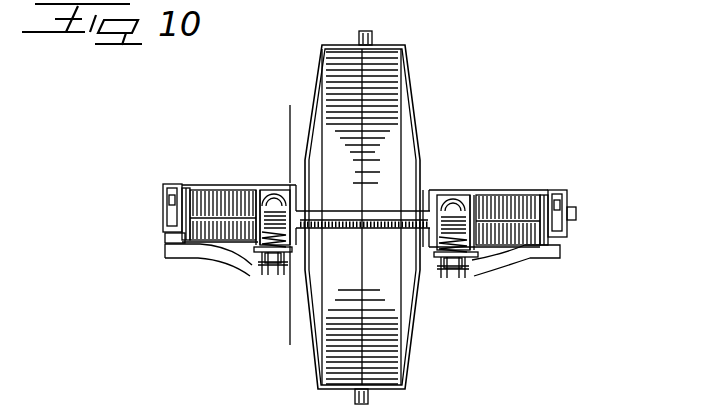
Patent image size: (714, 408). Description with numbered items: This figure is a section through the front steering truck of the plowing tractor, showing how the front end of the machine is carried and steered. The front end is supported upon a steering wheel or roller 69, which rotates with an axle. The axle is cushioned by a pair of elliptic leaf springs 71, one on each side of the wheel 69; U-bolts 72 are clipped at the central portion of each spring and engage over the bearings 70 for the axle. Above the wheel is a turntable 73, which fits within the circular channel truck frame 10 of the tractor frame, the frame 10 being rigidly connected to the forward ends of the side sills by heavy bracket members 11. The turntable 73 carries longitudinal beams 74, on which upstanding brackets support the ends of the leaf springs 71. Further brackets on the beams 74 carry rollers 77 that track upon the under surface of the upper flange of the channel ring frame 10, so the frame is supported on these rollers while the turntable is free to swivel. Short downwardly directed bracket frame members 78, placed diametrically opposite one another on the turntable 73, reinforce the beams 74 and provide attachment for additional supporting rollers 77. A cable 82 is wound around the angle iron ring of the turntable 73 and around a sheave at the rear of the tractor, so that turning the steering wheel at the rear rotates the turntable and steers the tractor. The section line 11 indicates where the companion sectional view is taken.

The circular channel truck frame 10 is at (511, 192).
The bracket members 11 is at (284, 336).
The steering wheel 69 is at (416, 130).
The bearings 70 is at (462, 197).
The elliptic leaf springs 71 is at (270, 266).
The U-bolts 72 is at (258, 203).
The turntable 73 is at (230, 240).
The longitudinal beams 74 is at (262, 268).
The rollers 77 is at (163, 196).
The bracket frame members 78 is at (222, 262).
The cable 82 is at (168, 234).